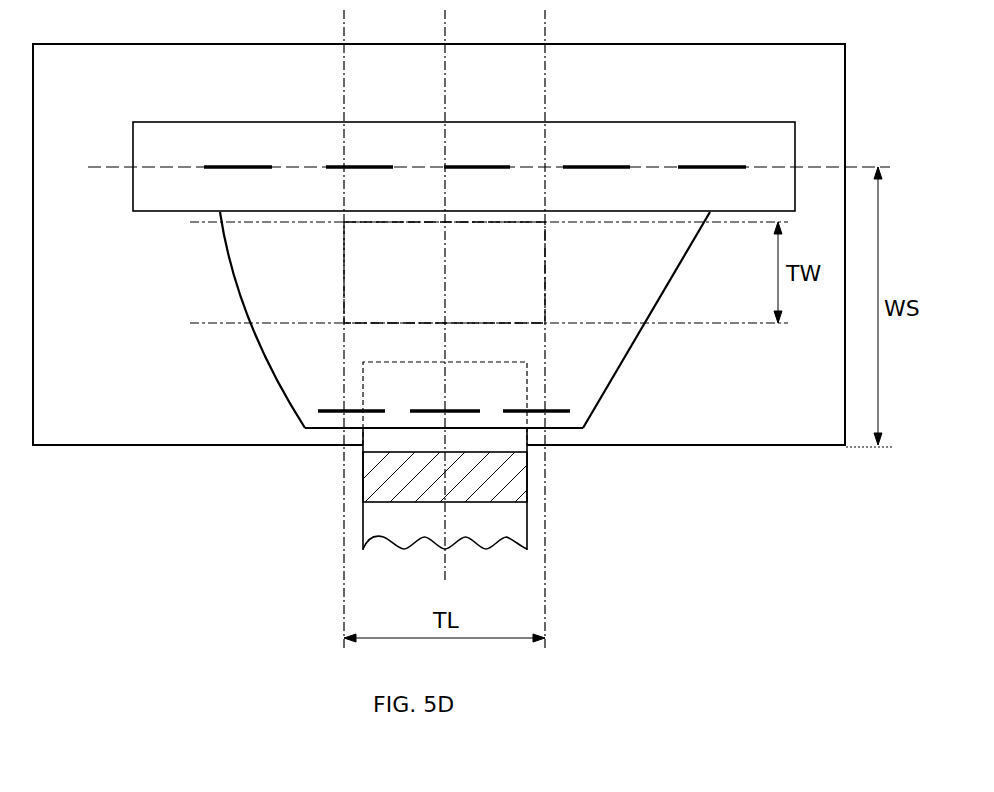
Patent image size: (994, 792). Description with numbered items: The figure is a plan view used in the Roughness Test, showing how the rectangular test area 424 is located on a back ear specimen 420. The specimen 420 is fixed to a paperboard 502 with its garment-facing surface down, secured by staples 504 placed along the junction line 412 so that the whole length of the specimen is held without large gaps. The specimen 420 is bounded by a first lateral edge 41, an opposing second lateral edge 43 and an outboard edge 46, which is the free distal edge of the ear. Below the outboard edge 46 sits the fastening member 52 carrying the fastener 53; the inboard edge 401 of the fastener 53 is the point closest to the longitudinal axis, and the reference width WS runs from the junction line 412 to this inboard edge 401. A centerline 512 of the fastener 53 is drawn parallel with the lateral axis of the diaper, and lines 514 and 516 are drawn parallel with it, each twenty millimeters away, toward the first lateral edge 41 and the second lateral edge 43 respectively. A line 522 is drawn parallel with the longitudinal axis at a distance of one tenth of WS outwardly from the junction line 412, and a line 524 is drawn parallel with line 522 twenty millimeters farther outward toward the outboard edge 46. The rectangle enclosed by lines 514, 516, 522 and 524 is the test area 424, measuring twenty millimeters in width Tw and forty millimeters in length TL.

The first lateral edge 41 is at (275, 378).
The second lateral edge 43 is at (612, 390).
The outboard edge 46 is at (333, 431).
The fastening member 52 is at (530, 527).
The fastener 53 is at (520, 480).
The inboard edge of the fastener 401 is at (408, 450).
The junction line 412 is at (100, 166).
The back ear specimen 420 is at (492, 357).
The test area 424 is at (540, 273).
The paperboard 502 is at (155, 437).
The staples 504 is at (594, 165).
The centerline 512 is at (446, 30).
The line 514 is at (344, 30).
The line 516 is at (546, 30).
The line 522 is at (205, 225).
The line 524 is at (205, 325).